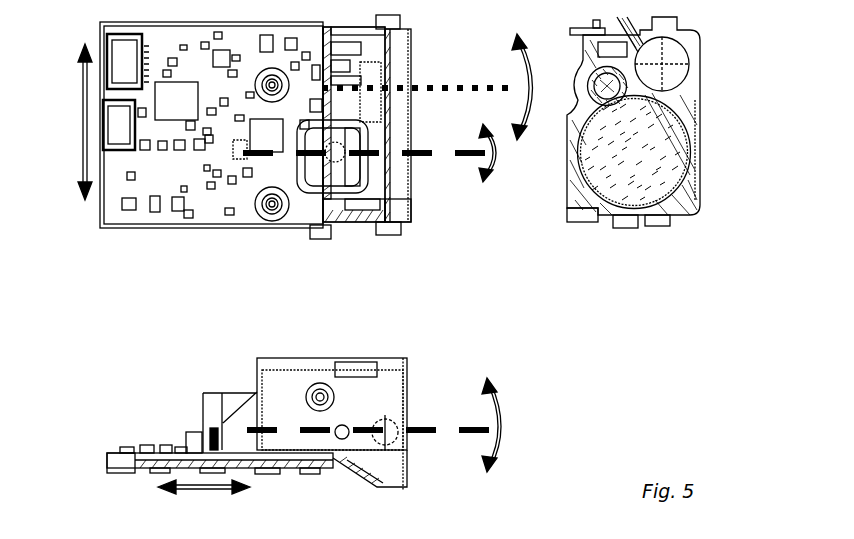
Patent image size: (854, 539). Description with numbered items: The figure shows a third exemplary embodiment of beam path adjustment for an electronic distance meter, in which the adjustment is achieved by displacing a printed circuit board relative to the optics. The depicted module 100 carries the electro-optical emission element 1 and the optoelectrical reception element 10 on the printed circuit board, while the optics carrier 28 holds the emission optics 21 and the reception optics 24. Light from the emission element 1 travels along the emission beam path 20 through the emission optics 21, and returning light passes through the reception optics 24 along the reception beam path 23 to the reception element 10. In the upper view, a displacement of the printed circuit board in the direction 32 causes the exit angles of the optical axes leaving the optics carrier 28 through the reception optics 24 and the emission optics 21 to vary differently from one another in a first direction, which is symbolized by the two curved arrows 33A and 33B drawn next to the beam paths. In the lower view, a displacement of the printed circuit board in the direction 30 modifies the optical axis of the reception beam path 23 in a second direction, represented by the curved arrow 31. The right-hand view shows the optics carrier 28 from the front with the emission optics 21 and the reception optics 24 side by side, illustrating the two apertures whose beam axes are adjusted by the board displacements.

The electro-optical emission element 1 is at (350, 162).
The optoelectrical reception element 10 is at (305, 209).
The emission beam path 20 is at (442, 140).
The emission optics 21 is at (656, 139).
The reception beam path 23 is at (376, 227).
The reception optics 24 is at (659, 198).
The optics carrier 28 is at (358, 398).
The direction (of printed circuit board displacement) 30 is at (228, 508).
The curved arrow 31 is at (417, 428).
The direction (of printed circuit board displacement) 32 is at (127, 170).
The curved arrow 33A is at (483, 158).
The curved arrow 33B is at (561, 221).
The module 100 is at (143, 457).